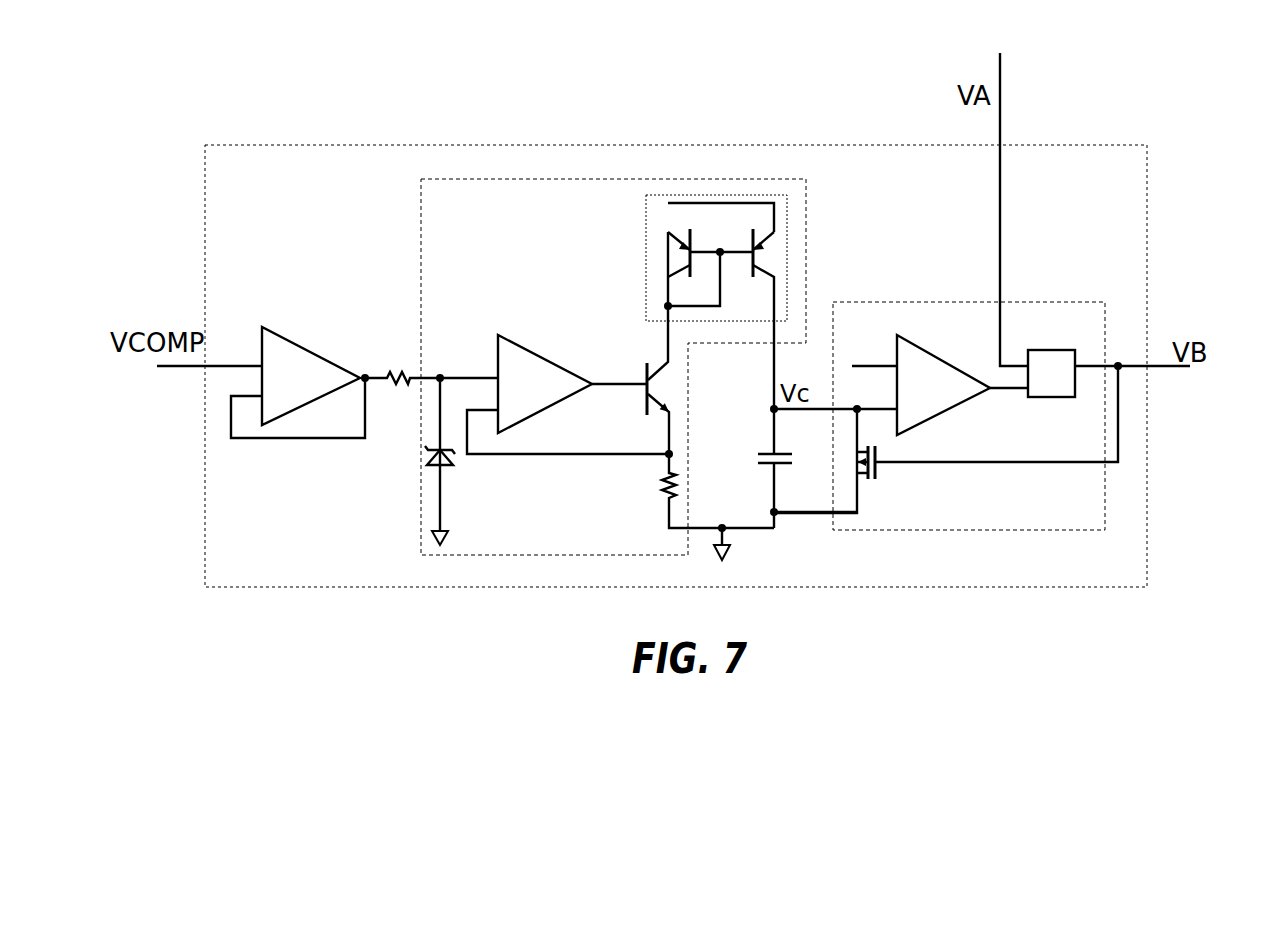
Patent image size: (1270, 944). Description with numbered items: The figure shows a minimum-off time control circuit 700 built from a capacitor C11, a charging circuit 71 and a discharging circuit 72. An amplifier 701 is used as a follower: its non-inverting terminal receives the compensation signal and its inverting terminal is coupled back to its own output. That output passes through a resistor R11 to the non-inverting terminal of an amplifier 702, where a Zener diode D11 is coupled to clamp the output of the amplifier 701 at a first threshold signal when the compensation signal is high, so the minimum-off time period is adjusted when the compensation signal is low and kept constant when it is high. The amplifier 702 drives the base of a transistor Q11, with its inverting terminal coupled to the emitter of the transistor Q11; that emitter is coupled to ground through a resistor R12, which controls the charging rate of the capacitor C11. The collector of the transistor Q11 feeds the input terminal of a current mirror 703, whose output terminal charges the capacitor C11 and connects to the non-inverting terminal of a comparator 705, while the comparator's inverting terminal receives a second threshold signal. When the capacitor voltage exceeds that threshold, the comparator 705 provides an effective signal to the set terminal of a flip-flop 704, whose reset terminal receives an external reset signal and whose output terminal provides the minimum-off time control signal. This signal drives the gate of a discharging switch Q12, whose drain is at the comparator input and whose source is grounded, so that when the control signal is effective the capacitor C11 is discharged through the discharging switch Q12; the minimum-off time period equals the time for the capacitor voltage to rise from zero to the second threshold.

The minimum-off time control circuit 700 is at (1170, 143).
The charging circuit 71 is at (806, 179).
The discharging circuit 72 is at (1052, 302).
The amplifier 701 is at (282, 326).
The amplifier 702 is at (514, 343).
The current mirror 703 is at (643, 213).
The flip-flop 704 is at (1040, 350).
The comparator 705 is at (963, 402).
The resistor R11 is at (402, 363).
The Zener diode D11 is at (460, 461).
The transistor Q11 is at (641, 380).
The resistor R12 is at (693, 491).
The capacitor C11 is at (752, 468).
The discharging switch Q12 is at (946, 439).